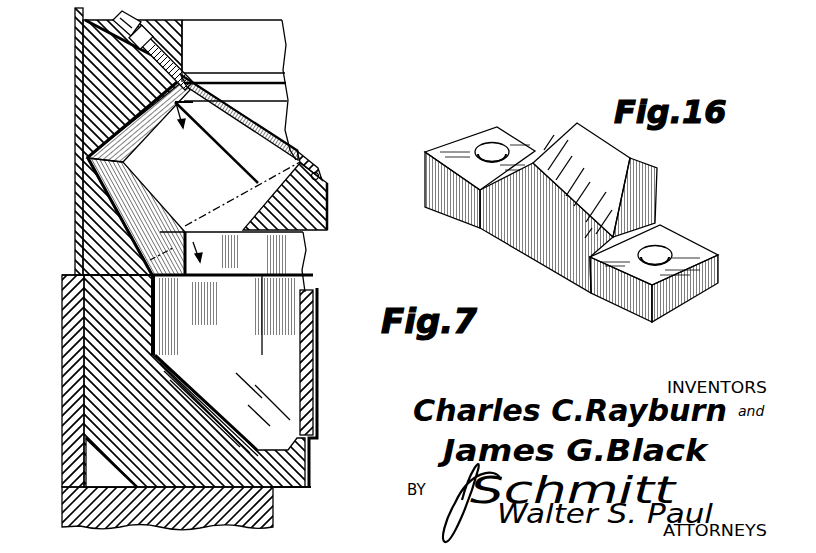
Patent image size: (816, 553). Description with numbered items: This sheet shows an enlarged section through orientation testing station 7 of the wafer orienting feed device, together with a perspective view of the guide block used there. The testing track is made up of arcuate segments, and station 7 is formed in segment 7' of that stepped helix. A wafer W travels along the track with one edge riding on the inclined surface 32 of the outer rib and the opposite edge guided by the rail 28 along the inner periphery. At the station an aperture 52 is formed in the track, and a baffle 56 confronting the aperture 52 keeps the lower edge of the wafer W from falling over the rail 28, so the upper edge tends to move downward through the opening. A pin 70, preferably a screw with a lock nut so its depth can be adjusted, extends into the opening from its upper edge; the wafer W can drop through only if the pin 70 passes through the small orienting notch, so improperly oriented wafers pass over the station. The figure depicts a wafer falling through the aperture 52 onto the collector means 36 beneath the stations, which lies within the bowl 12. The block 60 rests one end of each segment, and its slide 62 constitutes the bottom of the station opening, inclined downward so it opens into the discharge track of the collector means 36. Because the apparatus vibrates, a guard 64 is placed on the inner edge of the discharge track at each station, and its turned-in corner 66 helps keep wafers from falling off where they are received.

In FIG. 7, the arcuate segment 7' is at (181, 265).
In FIG. 7, the pin 70 is at (183, 70).
In FIG. 7, the inclined surface 32 is at (280, 93).
In FIG. 7, the wafer W is at (235, 121).
In FIG. 7, the orientation testing station 7 is at (226, 142).
In FIG. 7, the baffle 56 is at (312, 158).
In FIG. 7, the rail 28 is at (320, 174).
In FIG. 7, the aperture 52 is at (155, 146).
In FIG. 7, the slide 62 is at (117, 185).
In FIG. 16, the slide 62 is at (620, 178).
In FIG. 7, the collector means 36 is at (160, 347).
In FIG. 7, the corner 66 is at (320, 300).
In FIG. 7, the guard 64 is at (310, 382).
In FIG. 7, the bowl 12 is at (272, 512).
In FIG. 16, the block 60 is at (673, 228).